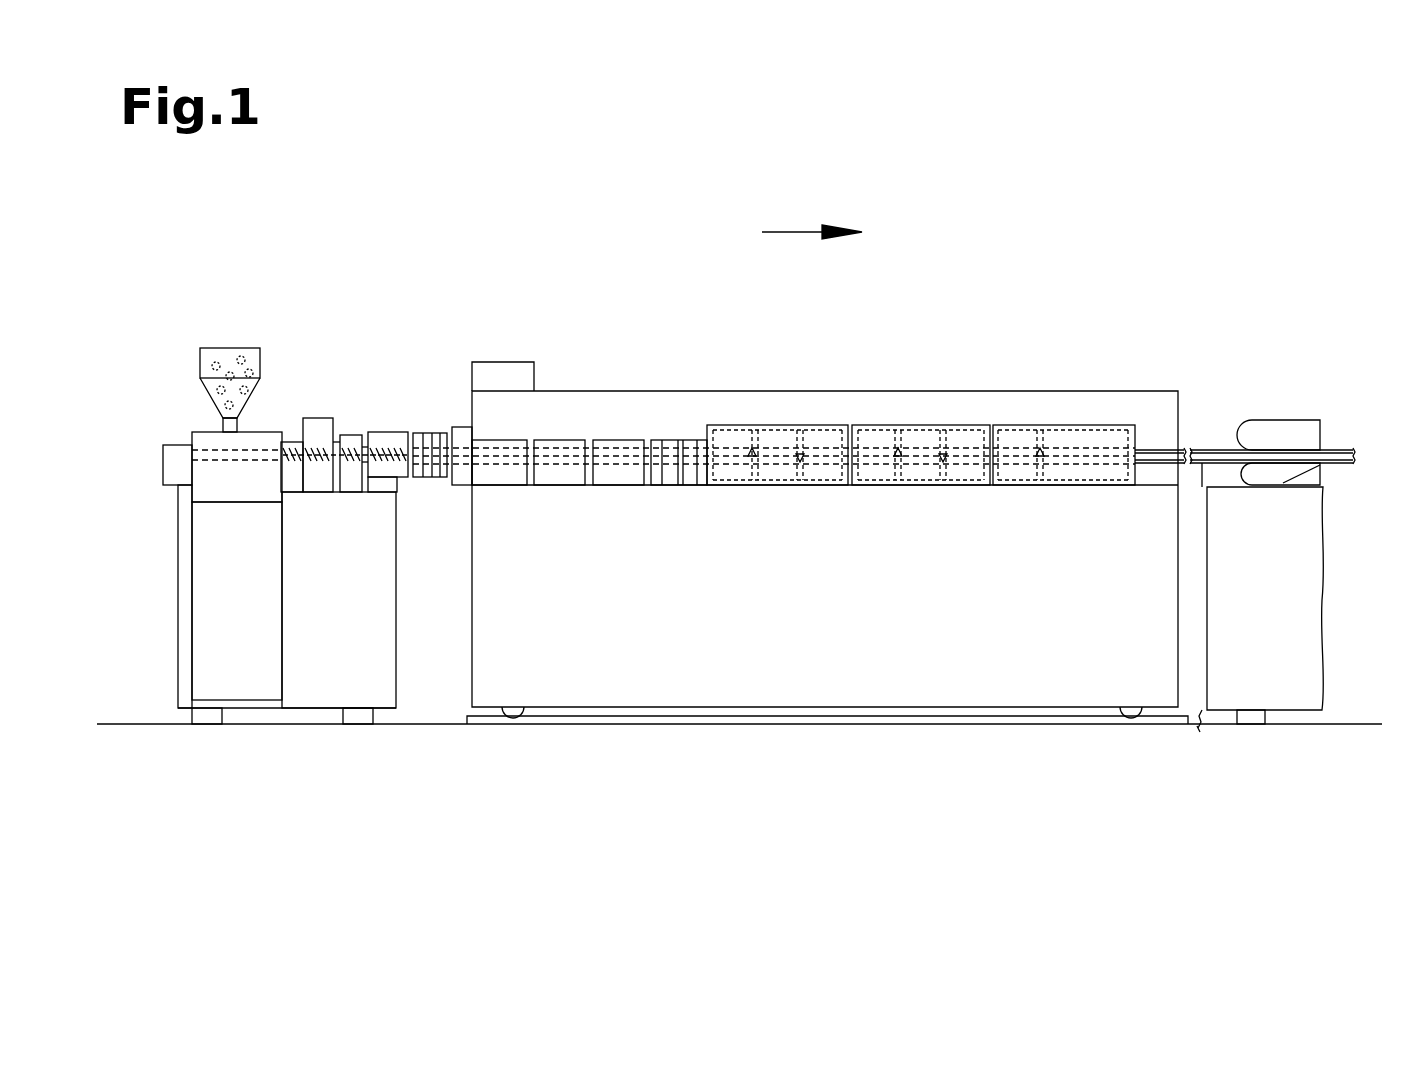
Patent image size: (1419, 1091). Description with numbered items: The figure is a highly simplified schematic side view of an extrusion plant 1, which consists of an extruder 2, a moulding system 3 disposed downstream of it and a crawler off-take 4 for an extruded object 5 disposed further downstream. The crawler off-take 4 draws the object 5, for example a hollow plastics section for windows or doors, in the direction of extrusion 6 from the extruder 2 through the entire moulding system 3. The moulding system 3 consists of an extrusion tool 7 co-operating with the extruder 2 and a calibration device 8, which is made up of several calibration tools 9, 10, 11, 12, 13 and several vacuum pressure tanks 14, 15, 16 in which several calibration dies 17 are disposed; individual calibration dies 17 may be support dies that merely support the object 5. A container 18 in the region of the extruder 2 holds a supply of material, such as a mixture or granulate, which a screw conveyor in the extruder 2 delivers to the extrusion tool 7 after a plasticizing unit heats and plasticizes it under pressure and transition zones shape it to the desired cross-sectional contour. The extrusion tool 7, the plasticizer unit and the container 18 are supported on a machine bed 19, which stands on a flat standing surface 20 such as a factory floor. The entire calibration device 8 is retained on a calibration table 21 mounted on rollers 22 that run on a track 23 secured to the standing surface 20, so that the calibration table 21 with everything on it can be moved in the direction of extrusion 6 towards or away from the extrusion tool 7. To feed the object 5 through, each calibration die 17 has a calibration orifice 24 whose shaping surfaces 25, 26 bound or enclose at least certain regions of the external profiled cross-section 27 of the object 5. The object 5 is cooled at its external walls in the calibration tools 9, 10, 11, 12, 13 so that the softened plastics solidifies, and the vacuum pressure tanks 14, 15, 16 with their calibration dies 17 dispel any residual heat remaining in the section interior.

The extrusion plant 1 is at (1258, 267).
The extruder 2 is at (353, 388).
The moulding system 3 is at (702, 245).
The crawler off-take 4 is at (1269, 435).
The extruded object 5 is at (1333, 452).
The direction of extrusion 6 is at (785, 232).
The extrusion tool 7 is at (435, 438).
The calibration device 8 is at (921, 321).
The calibration tool 9 is at (457, 435).
The calibration tool 10 is at (496, 445).
The calibration tool 11 is at (557, 445).
The calibration tool 12 is at (618, 445).
The calibration tool 13 is at (677, 445).
The vacuum pressure tank 14 is at (780, 435).
The vacuum pressure tank 15 is at (910, 445).
The vacuum pressure tank 16 is at (1052, 440).
The calibration die 17 is at (757, 445).
The container 18 is at (226, 352).
The machine bed 19 is at (228, 540).
The standing surface 20 is at (1338, 722).
The calibration table 21 is at (1160, 408).
The rollers 22 is at (1133, 712).
The track 23 is at (1178, 722).
The calibration orifice 24 is at (752, 452).
The shaping surface 25 is at (798, 462).
The shaping surface 26 is at (899, 452).
The external profiled cross-section 27 is at (1040, 452).